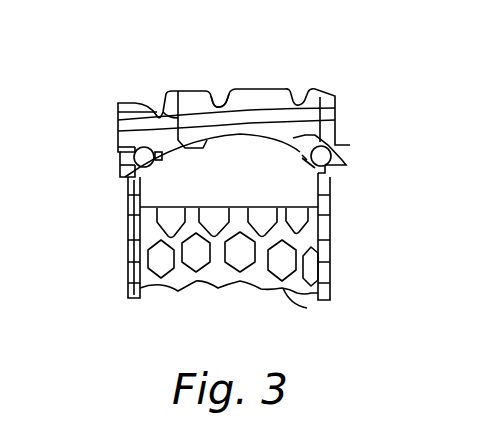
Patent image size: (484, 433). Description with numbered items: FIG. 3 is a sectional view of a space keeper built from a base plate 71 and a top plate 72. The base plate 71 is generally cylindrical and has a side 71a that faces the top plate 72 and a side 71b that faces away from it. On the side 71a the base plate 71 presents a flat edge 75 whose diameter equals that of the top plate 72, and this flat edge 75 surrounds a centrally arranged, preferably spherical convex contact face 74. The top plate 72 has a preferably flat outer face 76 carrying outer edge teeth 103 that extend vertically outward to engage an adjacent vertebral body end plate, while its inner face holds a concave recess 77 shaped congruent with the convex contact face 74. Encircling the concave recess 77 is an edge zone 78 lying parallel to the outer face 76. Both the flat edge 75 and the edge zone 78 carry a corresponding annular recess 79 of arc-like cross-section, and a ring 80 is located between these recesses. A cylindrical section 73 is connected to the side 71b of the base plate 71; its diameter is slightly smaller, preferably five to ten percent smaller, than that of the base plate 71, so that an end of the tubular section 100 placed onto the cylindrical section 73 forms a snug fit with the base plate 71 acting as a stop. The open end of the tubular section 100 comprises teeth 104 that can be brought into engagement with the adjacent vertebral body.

The base plate 71 is at (348, 165).
The side facing the top plate 71a is at (170, 148).
The side facing away from the top plate 71b is at (135, 237).
The top plate 72 is at (344, 120).
The cylindrical section 73 is at (330, 193).
The convex contact face 74 is at (263, 138).
The flat edge 75 is at (133, 152).
The outer face 76 is at (221, 107).
The concave recess 77 is at (177, 90).
The edge zone 78 is at (350, 145).
The annular recess 79 is at (125, 143).
The ring 80 is at (135, 170).
The tubular section 100 is at (330, 245).
The outer edge teeth 103 is at (335, 94).
The teeth 104 is at (307, 308).